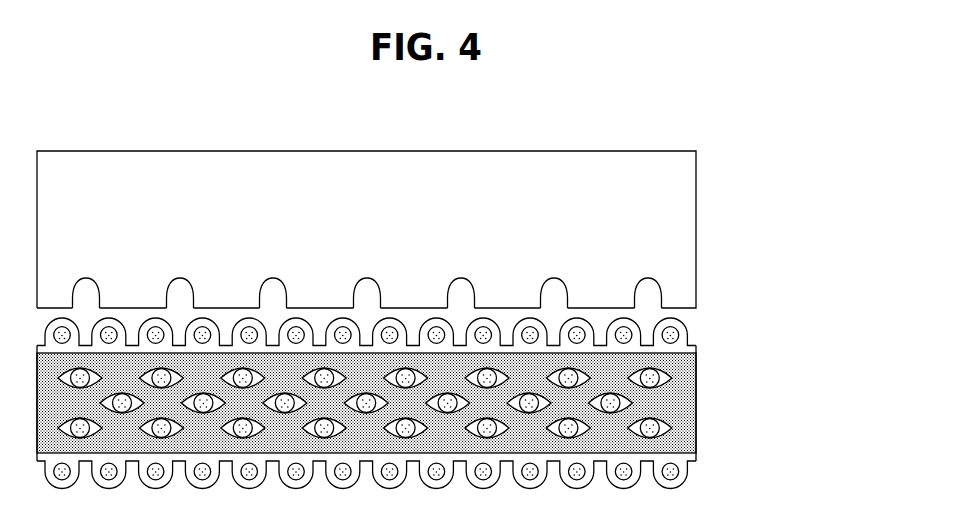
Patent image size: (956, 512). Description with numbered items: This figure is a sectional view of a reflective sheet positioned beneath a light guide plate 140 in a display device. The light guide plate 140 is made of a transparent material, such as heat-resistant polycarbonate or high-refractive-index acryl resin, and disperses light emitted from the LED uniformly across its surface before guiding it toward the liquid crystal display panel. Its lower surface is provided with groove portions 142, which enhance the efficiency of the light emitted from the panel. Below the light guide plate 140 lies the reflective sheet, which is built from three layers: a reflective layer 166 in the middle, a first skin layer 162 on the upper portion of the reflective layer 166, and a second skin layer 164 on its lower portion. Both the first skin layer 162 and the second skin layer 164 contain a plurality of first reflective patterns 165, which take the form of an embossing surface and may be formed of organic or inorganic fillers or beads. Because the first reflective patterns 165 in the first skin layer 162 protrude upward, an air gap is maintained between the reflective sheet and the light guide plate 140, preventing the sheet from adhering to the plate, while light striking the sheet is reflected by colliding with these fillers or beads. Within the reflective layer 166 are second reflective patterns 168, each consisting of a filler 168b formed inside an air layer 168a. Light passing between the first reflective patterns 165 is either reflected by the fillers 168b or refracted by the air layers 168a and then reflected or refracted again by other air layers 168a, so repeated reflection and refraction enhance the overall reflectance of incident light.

The light guide plate 140 is at (696, 191).
The groove portions 142 is at (656, 277).
The first skin layer 162 is at (696, 348).
The second skin layer 164 is at (696, 458).
The first reflective patterns 165 is at (671, 333).
The reflective layer 166 is at (688, 369).
The second reflective patterns 168 is at (456, 407).
The air layer 168a is at (664, 378).
The filler 168b is at (657, 383).